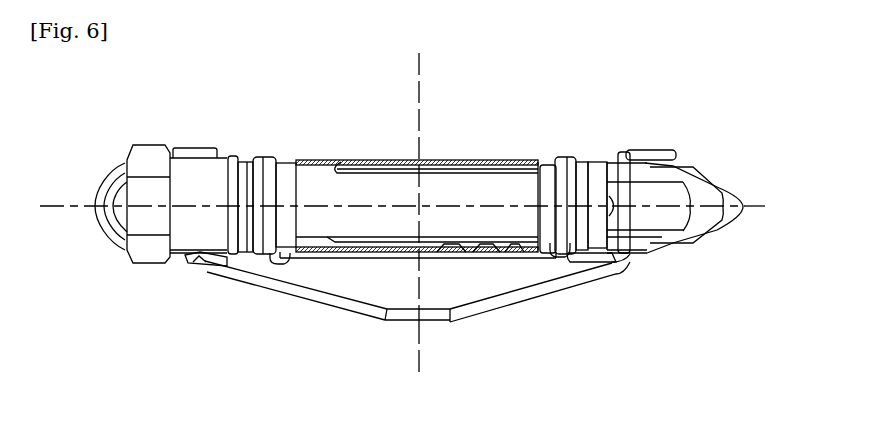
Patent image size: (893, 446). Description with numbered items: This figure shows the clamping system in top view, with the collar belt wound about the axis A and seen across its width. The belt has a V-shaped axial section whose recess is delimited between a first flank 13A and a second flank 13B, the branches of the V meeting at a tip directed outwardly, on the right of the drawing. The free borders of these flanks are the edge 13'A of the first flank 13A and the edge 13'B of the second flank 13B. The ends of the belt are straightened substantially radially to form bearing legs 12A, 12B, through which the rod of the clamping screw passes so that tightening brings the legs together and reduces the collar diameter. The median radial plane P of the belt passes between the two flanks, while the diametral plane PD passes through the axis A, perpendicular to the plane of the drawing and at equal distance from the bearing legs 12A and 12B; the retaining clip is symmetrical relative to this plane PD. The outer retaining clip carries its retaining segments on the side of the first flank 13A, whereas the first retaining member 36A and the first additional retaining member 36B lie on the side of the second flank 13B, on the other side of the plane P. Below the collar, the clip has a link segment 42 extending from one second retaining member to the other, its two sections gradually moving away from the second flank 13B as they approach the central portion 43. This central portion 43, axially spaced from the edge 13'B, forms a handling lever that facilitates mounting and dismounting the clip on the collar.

The bearing leg 12A is at (266, 158).
The bearing leg 12B is at (564, 158).
The edge of the first flank 13'A is at (432, 170).
The edge of the second flank 13'B is at (418, 297).
The first flank 13A is at (715, 183).
The second flank 13B is at (716, 231).
The first retaining member 36A is at (583, 263).
The first additional retaining member 36B is at (262, 266).
The link segment 42 is at (330, 322).
The central portion 43 is at (407, 320).
The axis A is at (420, 62).
The median radial plane P is at (760, 210).
The diametral plane PD is at (420, 355).